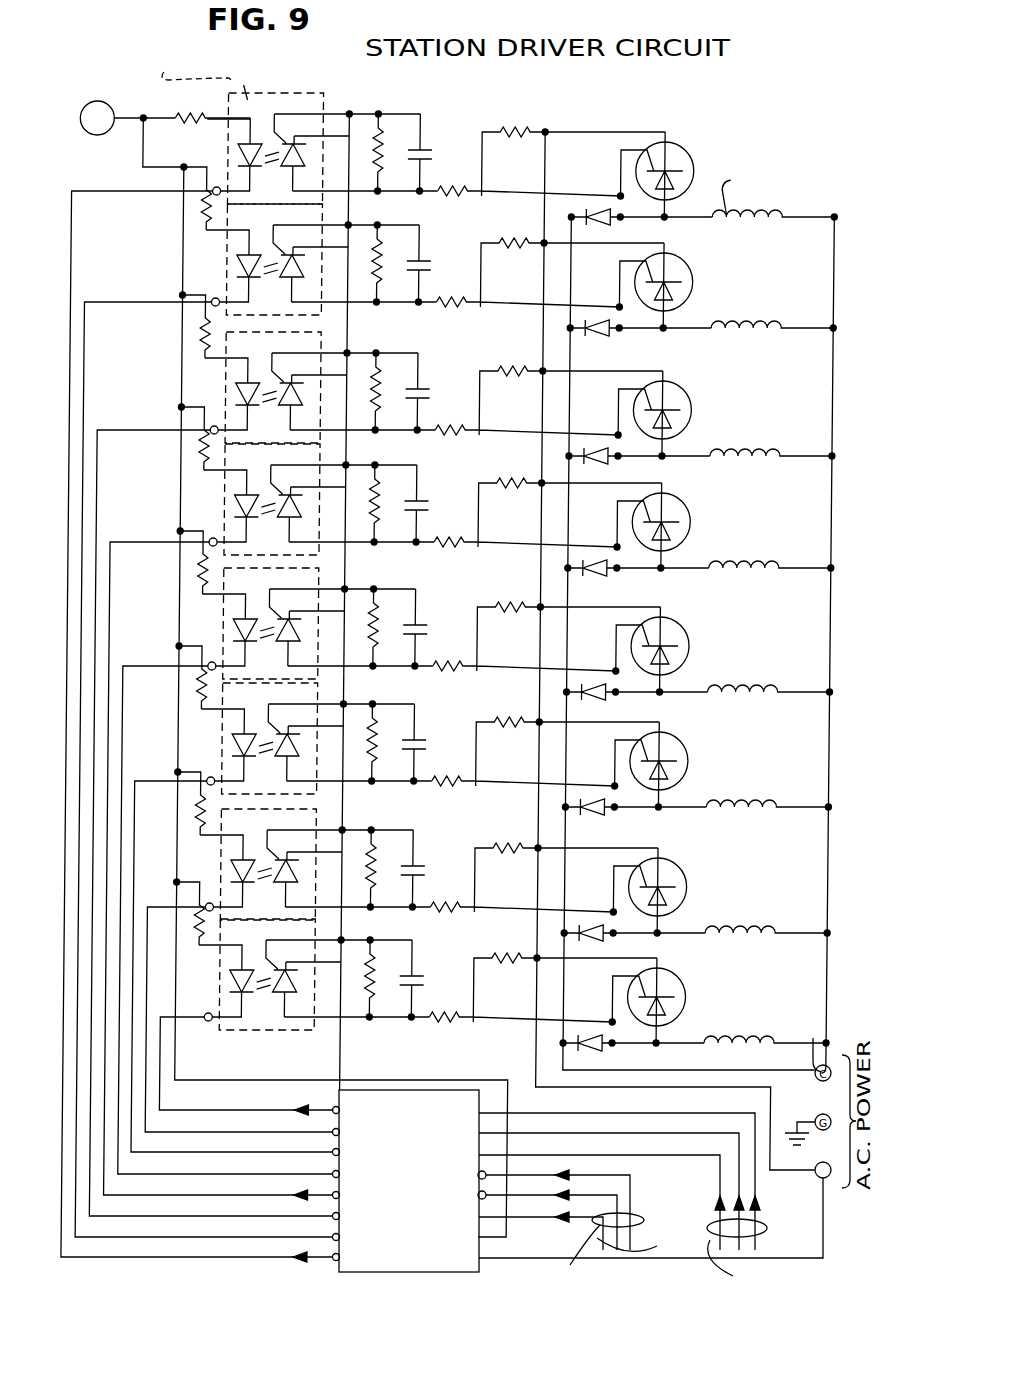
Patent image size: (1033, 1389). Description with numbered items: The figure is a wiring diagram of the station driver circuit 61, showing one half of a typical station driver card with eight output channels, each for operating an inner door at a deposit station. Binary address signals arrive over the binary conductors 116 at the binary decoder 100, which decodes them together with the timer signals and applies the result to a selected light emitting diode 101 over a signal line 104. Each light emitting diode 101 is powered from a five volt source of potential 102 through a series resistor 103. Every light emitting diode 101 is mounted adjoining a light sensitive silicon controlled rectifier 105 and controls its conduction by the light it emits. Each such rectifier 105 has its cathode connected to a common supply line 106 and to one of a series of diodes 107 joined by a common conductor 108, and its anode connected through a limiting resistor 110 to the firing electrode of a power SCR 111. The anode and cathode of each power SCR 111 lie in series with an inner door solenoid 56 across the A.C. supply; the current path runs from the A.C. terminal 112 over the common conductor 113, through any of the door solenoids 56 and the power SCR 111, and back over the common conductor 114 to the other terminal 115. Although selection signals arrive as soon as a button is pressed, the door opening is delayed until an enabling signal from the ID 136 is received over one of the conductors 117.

The inner door solenoid 56 is at (752, 230).
The station driver circuit 61 is at (775, 110).
The binary decoder 100 is at (445, 1100).
The light emitting diode 101 is at (239, 162).
The source of potential 102 is at (96, 102).
The resistor 103 is at (184, 110).
The signal line 104 is at (75, 246).
The light sensitive silicon controlled rectifier 105 is at (325, 145).
The common supply line 106 is at (354, 214).
The diode 107 is at (604, 223).
The common conductor 108 is at (576, 358).
The limiting resistor 110 is at (444, 194).
The power SCR 111 is at (687, 158).
The A.C. terminal 112 is at (803, 1043).
The common conductor 113 is at (840, 907).
The common conductor 114 is at (545, 212).
The A.C. terminal 115 is at (826, 1184).
The binary conductor 116 is at (764, 1228).
The conductor 117 is at (632, 1220).
The ID 136 is at (646, 1247).